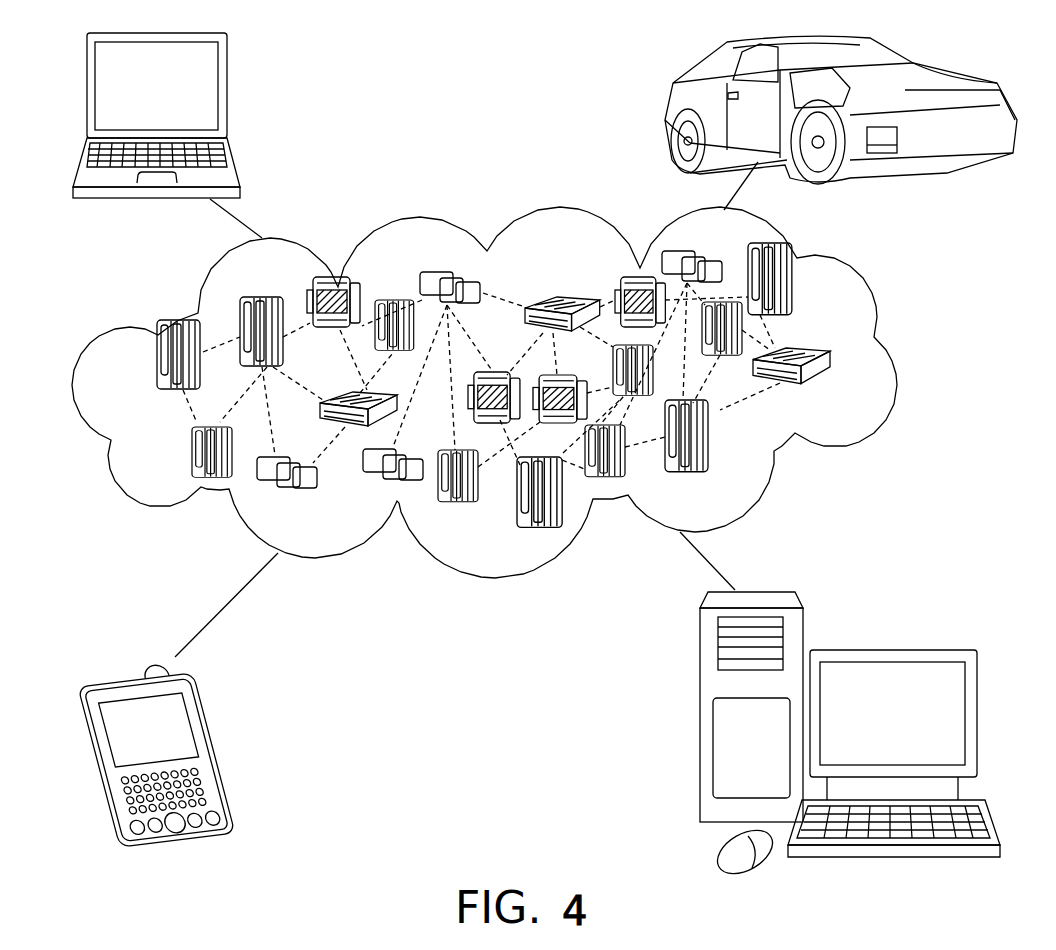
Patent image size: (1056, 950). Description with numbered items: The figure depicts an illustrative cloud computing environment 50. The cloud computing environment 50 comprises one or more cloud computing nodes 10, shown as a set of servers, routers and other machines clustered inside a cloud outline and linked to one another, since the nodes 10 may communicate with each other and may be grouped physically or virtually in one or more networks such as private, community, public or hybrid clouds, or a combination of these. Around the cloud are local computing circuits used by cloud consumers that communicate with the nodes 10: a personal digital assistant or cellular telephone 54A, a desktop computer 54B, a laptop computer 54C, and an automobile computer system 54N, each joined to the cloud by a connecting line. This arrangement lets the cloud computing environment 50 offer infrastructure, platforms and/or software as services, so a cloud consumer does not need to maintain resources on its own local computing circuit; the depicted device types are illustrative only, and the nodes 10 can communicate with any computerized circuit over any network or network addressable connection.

The cloud computing environment 50 is at (893, 367).
The cloud computing nodes 10 is at (840, 396).
The personal digital assistant (PDA) or cellular telephone 54A is at (217, 743).
The desktop computer 54B is at (888, 648).
The laptop computer 54C is at (227, 92).
The automobile computer system 54N is at (668, 110).